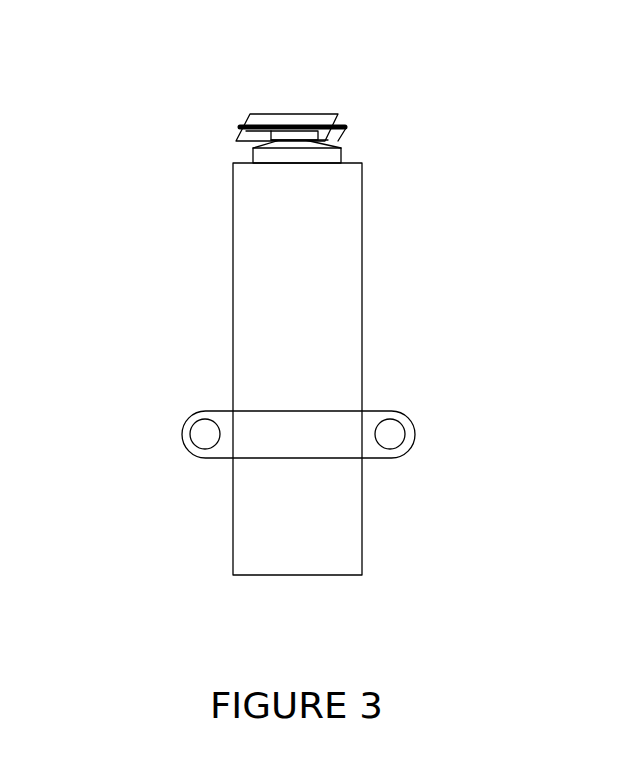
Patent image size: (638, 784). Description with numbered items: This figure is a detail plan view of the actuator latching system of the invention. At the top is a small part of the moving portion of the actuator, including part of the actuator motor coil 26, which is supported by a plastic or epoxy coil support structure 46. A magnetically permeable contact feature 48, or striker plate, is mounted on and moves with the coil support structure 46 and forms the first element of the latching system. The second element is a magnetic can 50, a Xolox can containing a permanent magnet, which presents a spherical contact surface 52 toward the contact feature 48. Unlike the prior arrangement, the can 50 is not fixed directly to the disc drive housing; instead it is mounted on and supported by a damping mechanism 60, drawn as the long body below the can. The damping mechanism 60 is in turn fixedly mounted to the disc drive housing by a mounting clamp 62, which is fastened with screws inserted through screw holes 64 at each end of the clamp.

The actuator motor coil 26 is at (322, 114).
The coil support structure 46 is at (265, 115).
The magnetically permeable contact feature 48 is at (295, 140).
The magnetic can 50 is at (305, 151).
The spherical contact surface 52 is at (317, 143).
The damping mechanism 60 is at (320, 272).
The mounting clamp 62 is at (182, 433).
The screw holes 64 is at (205, 437).